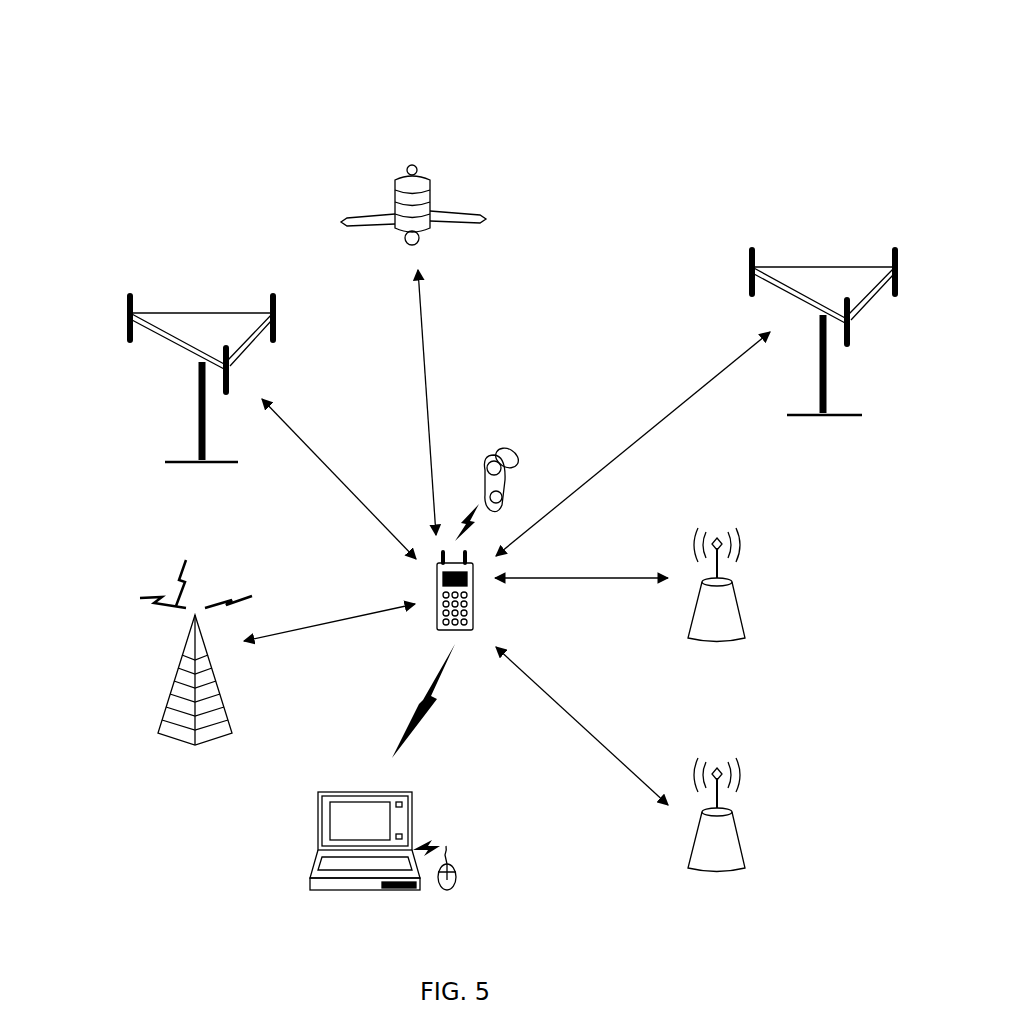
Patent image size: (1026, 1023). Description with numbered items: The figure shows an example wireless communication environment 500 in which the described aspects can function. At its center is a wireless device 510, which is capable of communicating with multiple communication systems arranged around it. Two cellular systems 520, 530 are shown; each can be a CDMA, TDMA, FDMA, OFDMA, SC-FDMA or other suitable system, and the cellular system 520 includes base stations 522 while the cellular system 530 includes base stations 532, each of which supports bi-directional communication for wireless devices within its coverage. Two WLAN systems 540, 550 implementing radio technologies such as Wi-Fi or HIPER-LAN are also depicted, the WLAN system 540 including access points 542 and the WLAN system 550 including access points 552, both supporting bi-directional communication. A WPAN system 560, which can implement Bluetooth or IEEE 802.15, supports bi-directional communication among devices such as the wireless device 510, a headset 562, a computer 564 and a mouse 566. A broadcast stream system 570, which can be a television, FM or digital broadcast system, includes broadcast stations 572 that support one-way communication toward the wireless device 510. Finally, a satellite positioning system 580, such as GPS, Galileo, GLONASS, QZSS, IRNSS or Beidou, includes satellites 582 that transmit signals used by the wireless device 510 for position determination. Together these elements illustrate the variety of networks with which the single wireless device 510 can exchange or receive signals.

The wireless communication environment 500 is at (152, 56).
The wireless device 510 is at (476, 592).
The cellular system 520 is at (150, 372).
The base station 522 is at (210, 303).
The cellular system 530 is at (759, 324).
The base station 532 is at (820, 266).
The WLAN system 540 is at (798, 584).
The access point 542 is at (740, 612).
The WLAN system 550 is at (797, 814).
The access point 552 is at (740, 842).
The WPAN system 560 is at (537, 440).
The headset 562 is at (496, 456).
The computer 564 is at (334, 792).
The mouse 566 is at (453, 867).
The broadcast stream system 570 is at (144, 652).
The broadcast station 572 is at (219, 700).
The satellite positioning system 580 is at (365, 168).
The satellite 582 is at (444, 213).